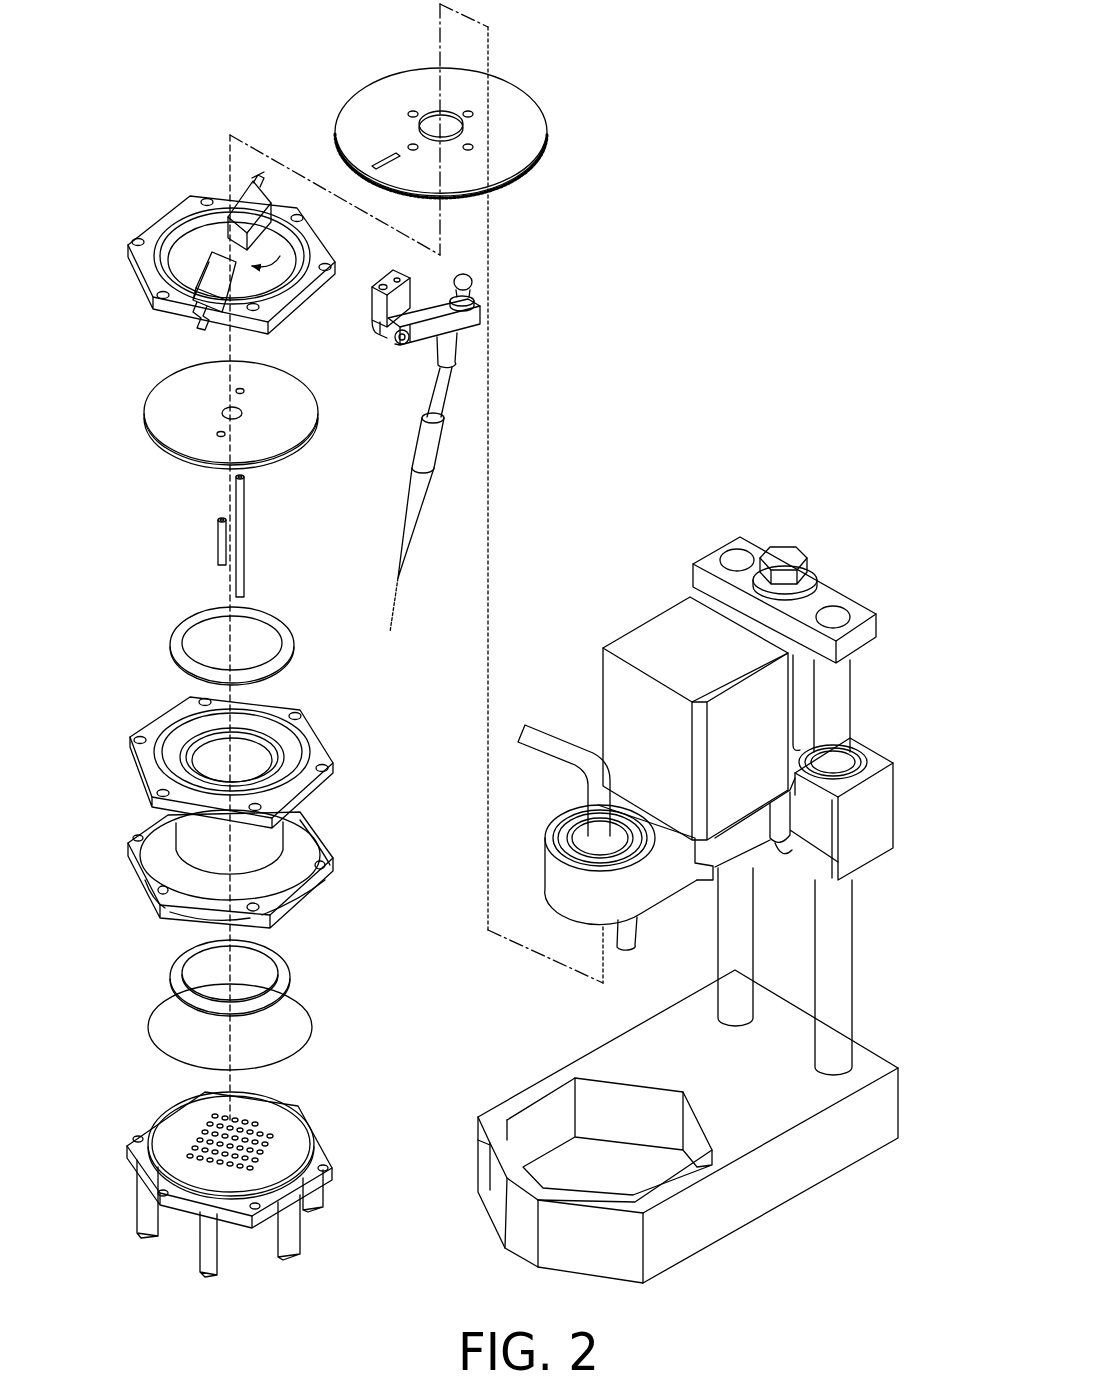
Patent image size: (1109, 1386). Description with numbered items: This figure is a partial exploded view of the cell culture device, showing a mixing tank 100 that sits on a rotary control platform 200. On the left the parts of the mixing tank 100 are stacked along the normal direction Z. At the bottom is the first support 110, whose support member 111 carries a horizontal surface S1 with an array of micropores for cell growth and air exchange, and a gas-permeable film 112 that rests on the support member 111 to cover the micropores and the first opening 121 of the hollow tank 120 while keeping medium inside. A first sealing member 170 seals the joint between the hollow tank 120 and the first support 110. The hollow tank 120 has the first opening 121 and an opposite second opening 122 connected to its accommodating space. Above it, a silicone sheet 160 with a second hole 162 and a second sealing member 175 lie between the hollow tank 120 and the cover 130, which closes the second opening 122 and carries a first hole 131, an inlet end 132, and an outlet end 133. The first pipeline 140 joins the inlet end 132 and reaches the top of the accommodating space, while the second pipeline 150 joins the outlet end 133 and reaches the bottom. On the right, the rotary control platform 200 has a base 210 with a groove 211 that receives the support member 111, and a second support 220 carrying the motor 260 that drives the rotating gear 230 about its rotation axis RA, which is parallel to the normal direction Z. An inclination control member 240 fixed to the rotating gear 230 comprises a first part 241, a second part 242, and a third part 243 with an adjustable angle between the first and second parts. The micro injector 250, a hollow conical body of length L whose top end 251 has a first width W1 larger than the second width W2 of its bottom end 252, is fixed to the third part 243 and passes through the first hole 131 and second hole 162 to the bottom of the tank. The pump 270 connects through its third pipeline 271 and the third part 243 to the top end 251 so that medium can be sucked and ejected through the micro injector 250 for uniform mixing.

The mixing tank 100 is at (766, 76).
The first support 110 is at (273, 1130).
The support member 111 is at (318, 1160).
The gas-permeable film 112 is at (287, 1040).
The hollow tank 120 is at (211, 814).
The first opening 121 is at (178, 920).
The second opening 122 is at (207, 756).
The cover 130 is at (170, 216).
The first hole 131 is at (285, 270).
The inlet end 132 is at (212, 255).
The outlet end 133 is at (250, 198).
The first pipeline 140 is at (218, 540).
The second pipeline 150 is at (244, 545).
The silicone sheet 160 is at (172, 402).
The second hole 162 is at (227, 408).
The first sealing member 170 is at (178, 978).
The second sealing member 175 is at (185, 625).
The rotary control platform 200 is at (899, 76).
The base 210 is at (710, 1126).
The groove 211 is at (568, 1158).
The second support 220 is at (885, 818).
The rotating gear 230 is at (372, 105).
The inclination control member 240 is at (496, 332).
The first part 241 is at (405, 297).
The second part 242 is at (425, 330).
The third part 243 is at (491, 375).
The micro injector 250 is at (435, 522).
The top end 251 is at (430, 450).
The bottom end 252 is at (420, 505).
The motor 260 is at (660, 623).
The pump 270 is at (678, 809).
The third pipeline 271 is at (553, 745).
The rotation axis RA is at (437, 90).
The horizontal surface S1 is at (195, 1120).
The length L is at (424, 415).
The first width W1 is at (468, 403).
The second width W2 is at (412, 627).
The normal direction Z is at (90, 1235).